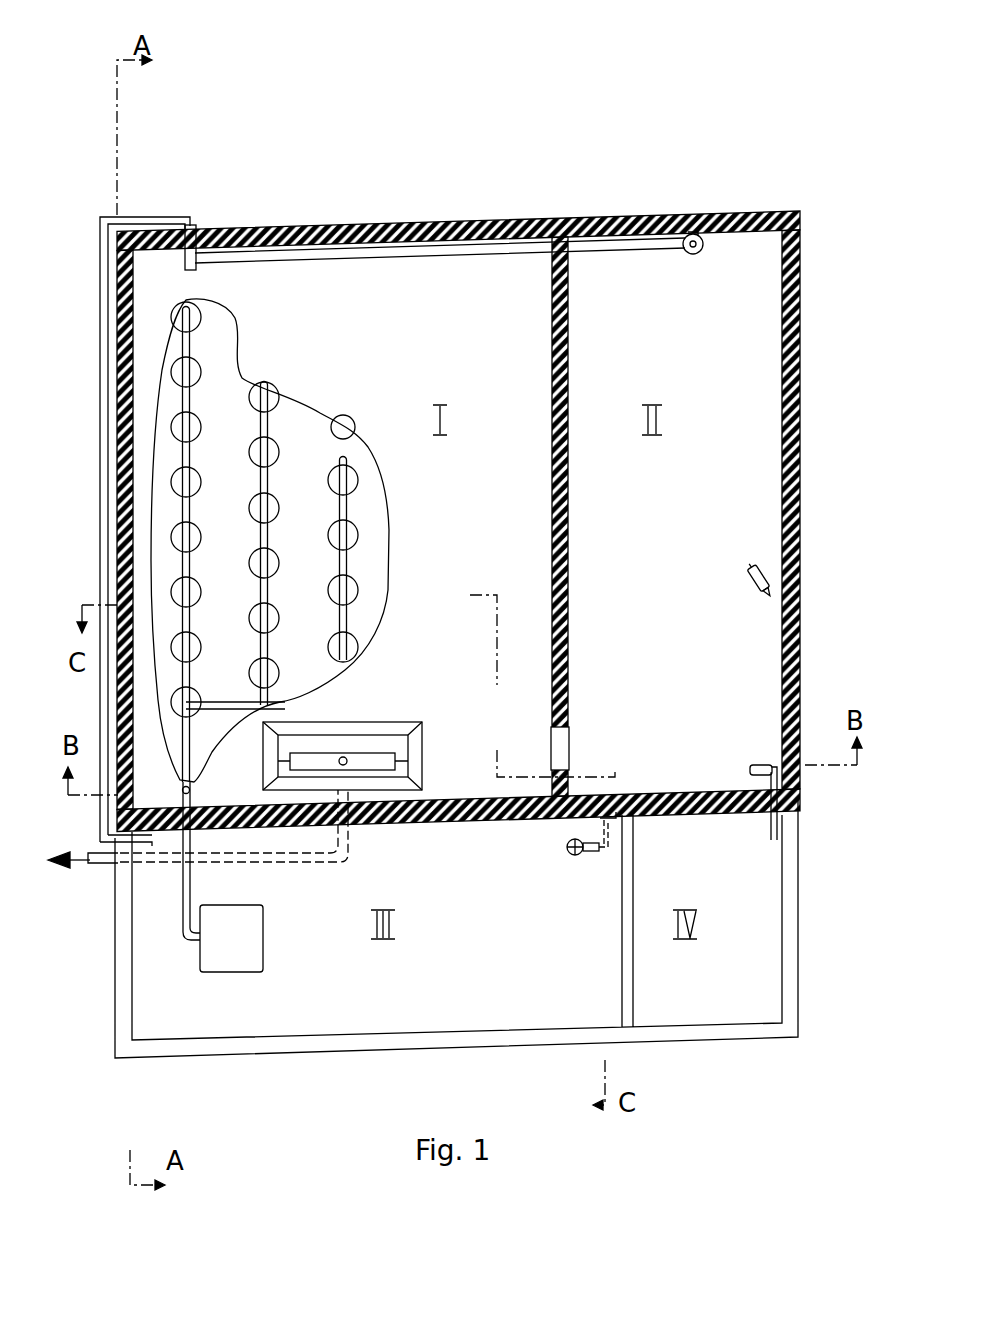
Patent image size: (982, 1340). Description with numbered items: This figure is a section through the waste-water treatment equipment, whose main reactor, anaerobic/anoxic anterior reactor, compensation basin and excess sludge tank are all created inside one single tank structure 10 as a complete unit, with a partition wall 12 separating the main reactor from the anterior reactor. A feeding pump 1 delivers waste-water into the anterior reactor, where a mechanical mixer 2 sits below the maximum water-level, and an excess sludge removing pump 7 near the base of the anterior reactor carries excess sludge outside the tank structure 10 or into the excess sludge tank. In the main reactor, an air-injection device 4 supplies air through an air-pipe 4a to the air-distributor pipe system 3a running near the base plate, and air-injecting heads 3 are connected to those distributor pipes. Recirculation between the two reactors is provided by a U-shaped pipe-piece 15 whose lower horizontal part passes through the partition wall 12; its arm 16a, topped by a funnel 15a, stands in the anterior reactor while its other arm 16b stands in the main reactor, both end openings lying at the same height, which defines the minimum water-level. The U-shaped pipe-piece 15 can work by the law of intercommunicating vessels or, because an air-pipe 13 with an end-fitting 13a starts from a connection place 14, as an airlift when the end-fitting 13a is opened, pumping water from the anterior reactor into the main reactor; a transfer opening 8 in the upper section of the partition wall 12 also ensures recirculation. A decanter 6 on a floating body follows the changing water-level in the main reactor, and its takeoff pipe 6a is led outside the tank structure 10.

The feeding pump 1 is at (572, 858).
The mechanical mixer 2 is at (753, 567).
The air-injecting heads 3 is at (176, 425).
The air-distributor pipe system 3a is at (174, 512).
The air-injection device 4 is at (231, 949).
The air-pipe 4a is at (185, 930).
The decanter 6 is at (425, 766).
The takeoff pipe 6a is at (310, 858).
The excess sludge removing pump 7 is at (755, 768).
The transfer opening 8 is at (560, 750).
The tank structure 10 is at (802, 405).
The partition wall 12 is at (566, 376).
The air-pipe 13 is at (103, 452).
The end-fitting 13a is at (157, 845).
The connection place 14 is at (152, 230).
The U-shaped pipe-piece 15 is at (428, 262).
The funnel 15a is at (703, 247).
The arm 16a is at (703, 235).
The arm 16b is at (198, 233).